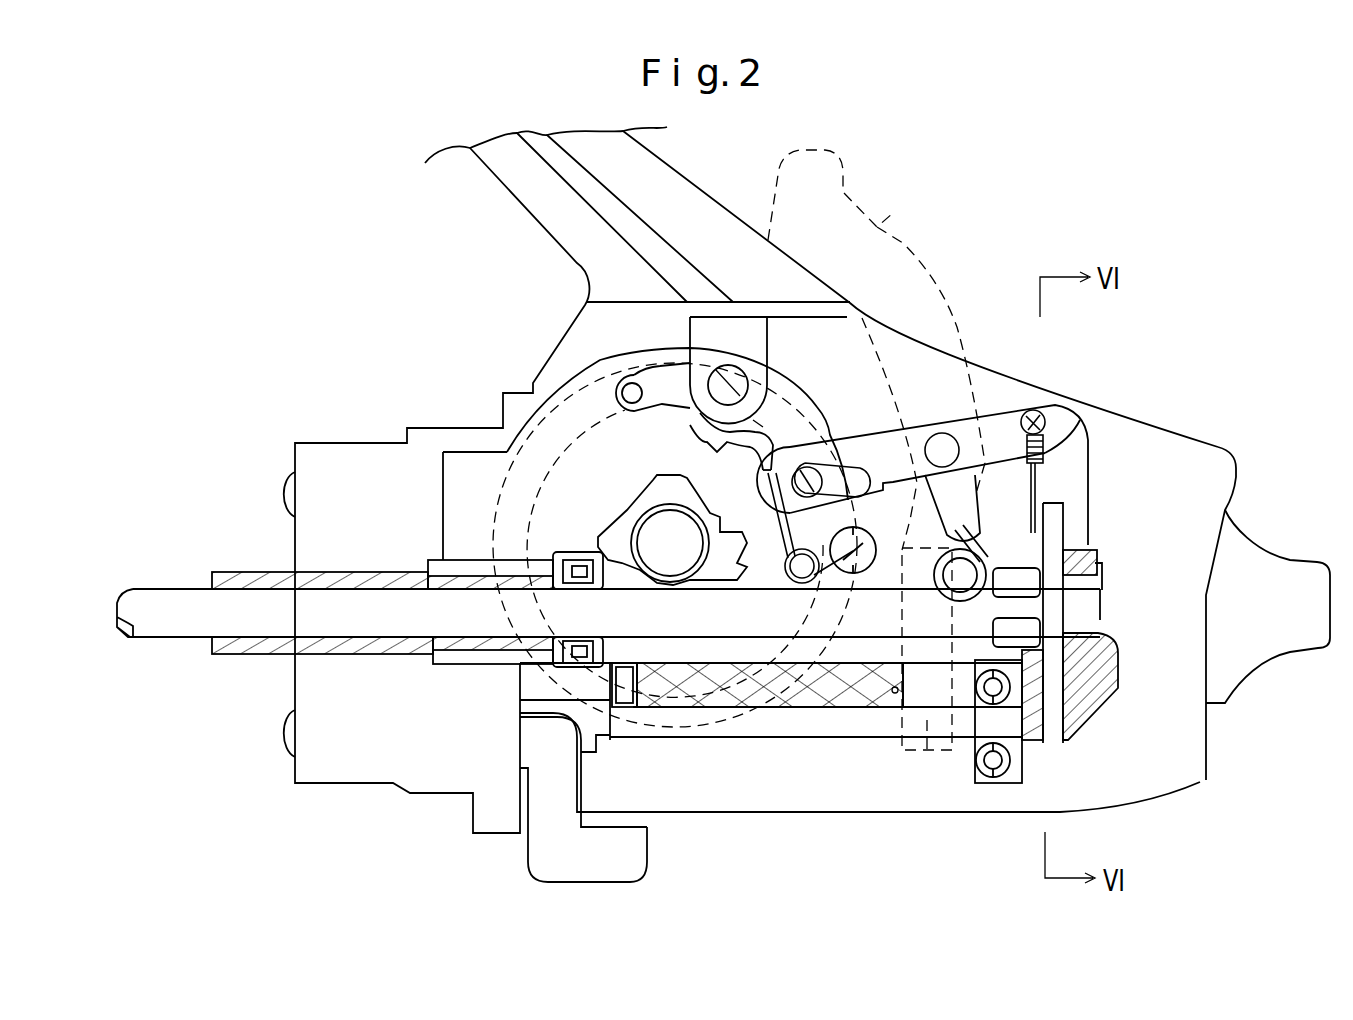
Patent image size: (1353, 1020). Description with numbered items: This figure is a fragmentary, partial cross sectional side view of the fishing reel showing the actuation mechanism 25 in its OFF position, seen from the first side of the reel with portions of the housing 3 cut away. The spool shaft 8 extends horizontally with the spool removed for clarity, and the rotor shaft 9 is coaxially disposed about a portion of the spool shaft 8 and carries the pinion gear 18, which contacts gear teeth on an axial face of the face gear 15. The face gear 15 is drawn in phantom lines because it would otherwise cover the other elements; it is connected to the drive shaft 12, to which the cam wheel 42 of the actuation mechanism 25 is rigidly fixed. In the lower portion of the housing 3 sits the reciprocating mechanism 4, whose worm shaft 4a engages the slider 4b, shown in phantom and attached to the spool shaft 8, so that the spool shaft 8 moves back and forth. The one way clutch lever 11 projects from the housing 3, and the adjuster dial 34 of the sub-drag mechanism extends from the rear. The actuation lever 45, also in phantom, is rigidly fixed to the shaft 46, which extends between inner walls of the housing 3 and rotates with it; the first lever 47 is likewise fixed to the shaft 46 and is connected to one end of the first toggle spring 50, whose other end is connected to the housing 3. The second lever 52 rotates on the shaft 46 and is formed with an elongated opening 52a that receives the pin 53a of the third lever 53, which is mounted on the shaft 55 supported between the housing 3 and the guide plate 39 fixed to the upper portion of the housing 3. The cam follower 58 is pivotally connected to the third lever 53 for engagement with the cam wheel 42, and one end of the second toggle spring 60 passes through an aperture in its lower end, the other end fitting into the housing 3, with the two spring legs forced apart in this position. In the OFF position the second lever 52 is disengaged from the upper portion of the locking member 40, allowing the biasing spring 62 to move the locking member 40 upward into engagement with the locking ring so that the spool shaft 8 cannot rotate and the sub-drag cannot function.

The housing 3 is at (1173, 467).
The reciprocating mechanism 4 is at (641, 760).
The worm shaft 4a is at (817, 690).
The slider 4b is at (932, 757).
The spool shaft 8 is at (187, 603).
The rotor shaft 9 is at (250, 647).
The one way clutch lever 11 is at (582, 855).
The drive shaft 12 is at (668, 540).
The face gear 15 is at (557, 397).
The pinion gear 18 is at (482, 655).
The actuation mechanism 25 is at (821, 359).
The adjuster dial 34 is at (1277, 588).
The guide plate 39 is at (714, 330).
The locking member 40 is at (1047, 693).
The cam wheel 42 is at (642, 577).
The actuation lever 45 is at (876, 350).
The shaft 46 is at (962, 417).
The first lever 47 is at (966, 512).
The first toggle spring 50 is at (940, 565).
The second lever 52 is at (1005, 413).
The elongated opening 52a is at (942, 450).
The third lever 53 is at (790, 410).
The pin 53a is at (813, 467).
The shaft 55 is at (707, 377).
The cam follower 58 is at (717, 450).
The second toggle spring 60 is at (788, 580).
The biasing spring 62 is at (1060, 420).